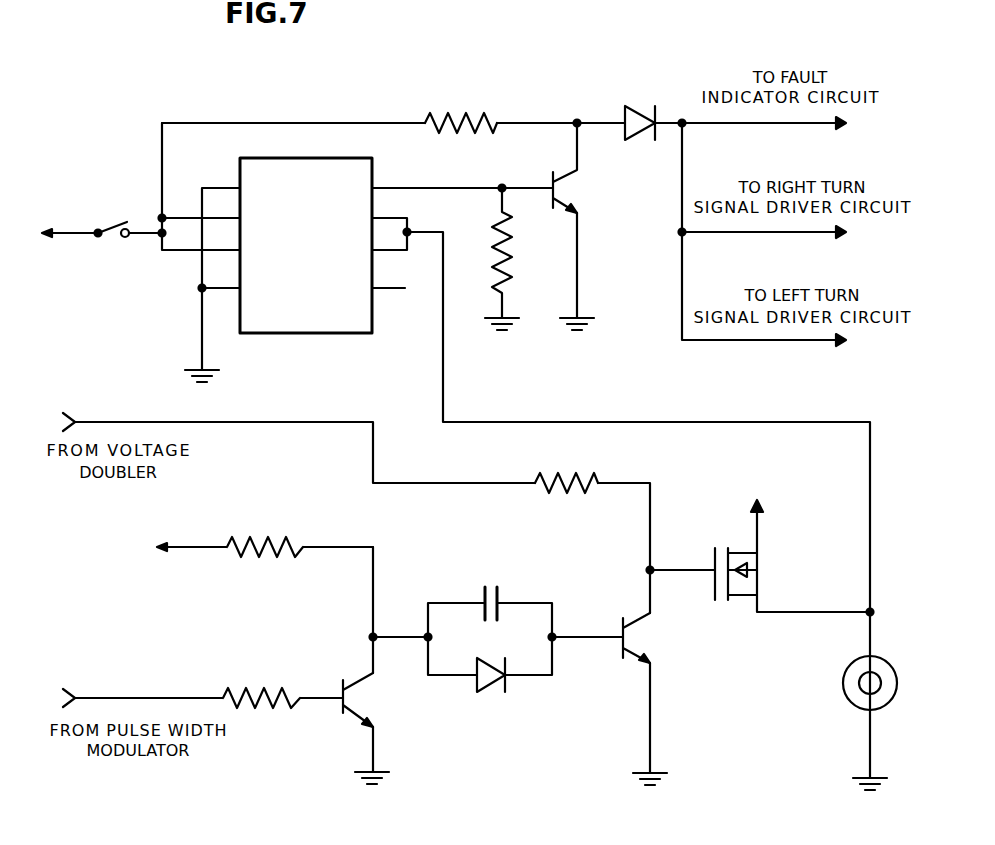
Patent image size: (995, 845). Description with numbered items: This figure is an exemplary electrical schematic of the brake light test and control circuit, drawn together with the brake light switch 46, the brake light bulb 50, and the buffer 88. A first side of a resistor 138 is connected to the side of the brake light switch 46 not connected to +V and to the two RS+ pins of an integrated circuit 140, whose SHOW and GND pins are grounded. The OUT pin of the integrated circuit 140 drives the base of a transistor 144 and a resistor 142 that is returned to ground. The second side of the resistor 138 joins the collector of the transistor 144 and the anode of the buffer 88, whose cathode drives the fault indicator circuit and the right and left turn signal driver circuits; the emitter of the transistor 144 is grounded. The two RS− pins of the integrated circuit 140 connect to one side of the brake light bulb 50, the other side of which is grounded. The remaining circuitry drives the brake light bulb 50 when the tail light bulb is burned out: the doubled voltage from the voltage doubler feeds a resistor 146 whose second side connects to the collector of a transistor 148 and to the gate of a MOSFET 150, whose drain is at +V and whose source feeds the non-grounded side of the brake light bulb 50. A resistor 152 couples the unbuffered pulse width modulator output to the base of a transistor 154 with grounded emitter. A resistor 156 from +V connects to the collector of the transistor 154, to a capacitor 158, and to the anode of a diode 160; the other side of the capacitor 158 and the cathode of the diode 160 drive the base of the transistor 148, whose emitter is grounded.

The brake light switch 46 is at (109, 215).
The resistor 138 is at (482, 103).
The buffer 88 is at (623, 113).
The integrated circuit 140 is at (323, 337).
The resistor 142 is at (530, 266).
The transistor 144 is at (573, 189).
The resistor 146 is at (571, 470).
The transistor 148 is at (641, 645).
The MOSFET 150 is at (762, 561).
The resistor 152 is at (252, 692).
The transistor 154 is at (350, 702).
The resistor 156 is at (268, 540).
The capacitor 158 is at (512, 565).
The diode 160 is at (492, 693).
The brake light bulb 50 is at (843, 683).